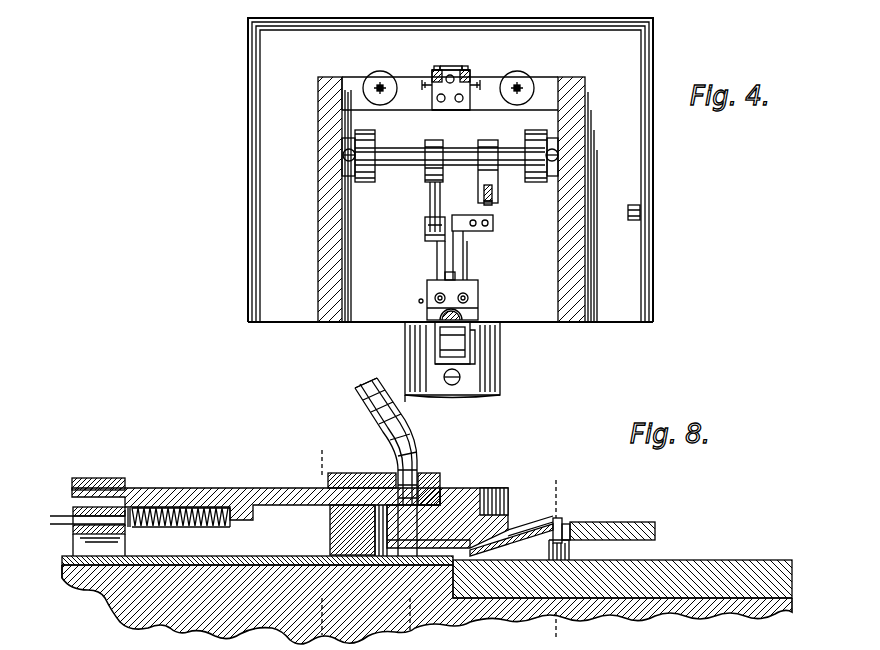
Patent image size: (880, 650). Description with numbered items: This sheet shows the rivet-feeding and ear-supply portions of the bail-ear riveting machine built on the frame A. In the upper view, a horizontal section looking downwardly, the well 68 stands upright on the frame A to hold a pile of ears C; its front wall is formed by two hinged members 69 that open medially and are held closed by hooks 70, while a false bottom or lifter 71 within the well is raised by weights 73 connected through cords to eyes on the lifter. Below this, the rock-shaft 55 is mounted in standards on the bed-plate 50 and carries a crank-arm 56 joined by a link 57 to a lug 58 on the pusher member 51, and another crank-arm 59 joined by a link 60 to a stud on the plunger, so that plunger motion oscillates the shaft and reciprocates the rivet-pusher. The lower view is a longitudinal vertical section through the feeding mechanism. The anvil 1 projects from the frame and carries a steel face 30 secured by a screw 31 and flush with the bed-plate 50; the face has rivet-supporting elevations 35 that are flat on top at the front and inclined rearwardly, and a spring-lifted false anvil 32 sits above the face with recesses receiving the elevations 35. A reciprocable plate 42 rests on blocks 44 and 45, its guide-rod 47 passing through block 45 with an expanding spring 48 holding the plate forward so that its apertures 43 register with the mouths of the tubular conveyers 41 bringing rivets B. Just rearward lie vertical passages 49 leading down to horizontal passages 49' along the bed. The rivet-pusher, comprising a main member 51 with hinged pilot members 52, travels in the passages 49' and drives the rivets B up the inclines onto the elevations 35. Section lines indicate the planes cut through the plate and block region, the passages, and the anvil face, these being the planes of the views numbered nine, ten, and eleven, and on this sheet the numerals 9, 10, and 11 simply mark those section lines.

In FIG. 4, the anvil 1 is at (500, 365).
In FIG. 8, the anvil 1 is at (792, 598).
In FIG. 8, the complementary clutch member 9 is at (317, 540).
In FIG. 4, the pawl 10 is at (408, 404).
In FIG. 8, the pawl 10 is at (410, 624).
In FIG. 8, the section line / stop post 11 is at (556, 556).
In FIG. 4, the steel face 30 is at (470, 385).
In FIG. 8, the steel face 30 is at (752, 560).
In FIG. 4, the screw 31 is at (452, 386).
In FIG. 4, the false anvil 32 is at (466, 350).
In FIG. 8, the false anvil 32 is at (655, 530).
In FIG. 8, the rivet-supporting elevation 35 is at (569, 549).
In FIG. 4, the tubular conveyer 41 is at (436, 298).
In FIG. 8, the tubular conveyer 41 is at (362, 393).
In FIG. 4, the reciprocable plate 42 is at (466, 262).
In FIG. 8, the reciprocable plate 42 is at (240, 488).
In FIG. 8, the vertical aperture 43 is at (392, 495).
In FIG. 4, the block 44 is at (478, 282).
In FIG. 8, the block 44 is at (467, 488).
In FIG. 4, the block 45 is at (493, 224).
In FIG. 8, the block 45 is at (102, 478).
In FIG. 8, the guide-rod 47 is at (73, 518).
In FIG. 8, the expanding spring 48 is at (190, 527).
In FIG. 8, the vertical passage 49 is at (339, 530).
In FIG. 8, the horizontal passage 49' is at (428, 547).
In FIG. 4, the bed-plate 50 is at (367, 166).
In FIG. 8, the bed-plate 50 is at (185, 608).
In FIG. 4, the main member of rivet-pusher 51 is at (437, 254).
In FIG. 8, the main member of rivet-pusher 51 is at (290, 556).
In FIG. 8, the pilot member 52 is at (527, 524).
In FIG. 4, the rock-shaft 55 is at (400, 148).
In FIG. 4, the crank-arm 56 is at (425, 172).
In FIG. 4, the link 57 is at (430, 200).
In FIG. 4, the lug 58 is at (425, 228).
In FIG. 4, the crank-arm 59 is at (478, 180).
In FIG. 4, the link 60 is at (493, 204).
In FIG. 4, the well 68 is at (432, 100).
In FIG. 4, the hinged member 69 is at (434, 70).
In FIG. 4, the hook 70 is at (451, 66).
In FIG. 4, the lifter 71 is at (470, 97).
In FIG. 4, the weight 73 is at (391, 78).
In FIG. 4, the frame A is at (573, 280).
In FIG. 8, the rivet B is at (420, 446).
In FIG. 4, the ear C is at (455, 110).